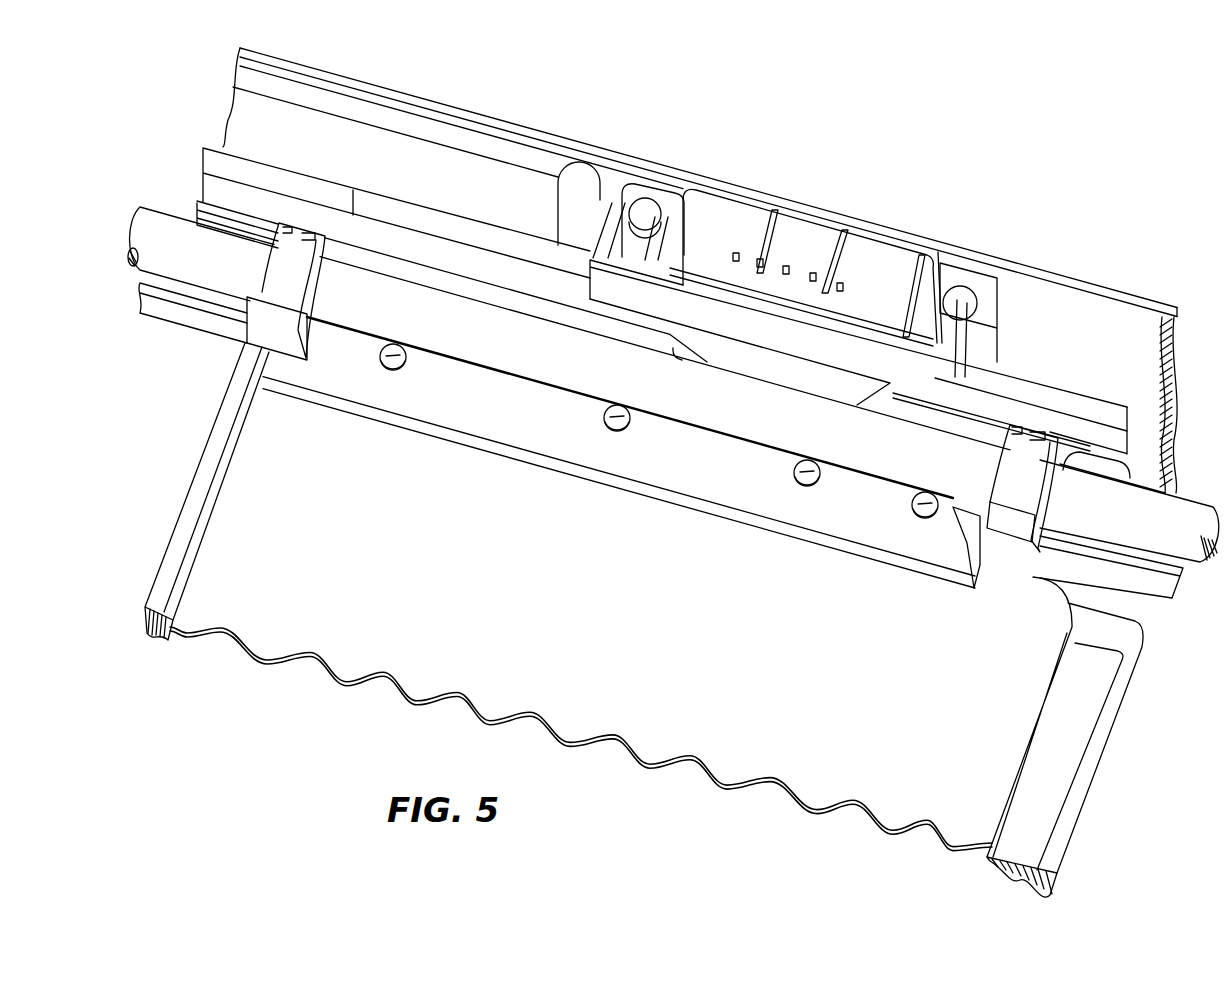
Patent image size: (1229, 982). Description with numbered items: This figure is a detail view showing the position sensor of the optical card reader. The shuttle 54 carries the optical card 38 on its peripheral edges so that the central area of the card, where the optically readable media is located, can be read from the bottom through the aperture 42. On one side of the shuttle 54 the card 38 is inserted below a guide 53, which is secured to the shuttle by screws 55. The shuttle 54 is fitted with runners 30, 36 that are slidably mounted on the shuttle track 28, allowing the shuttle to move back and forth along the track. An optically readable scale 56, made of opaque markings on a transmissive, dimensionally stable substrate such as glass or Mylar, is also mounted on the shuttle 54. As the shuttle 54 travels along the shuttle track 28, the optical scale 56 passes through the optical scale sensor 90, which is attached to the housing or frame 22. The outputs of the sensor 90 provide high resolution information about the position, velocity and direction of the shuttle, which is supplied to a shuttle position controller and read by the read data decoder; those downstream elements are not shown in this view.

The housing 22 is at (1010, 263).
The shuttle track 28 is at (513, 328).
The runner 30 is at (279, 255).
The runner 36 is at (1017, 463).
The card 38 is at (691, 712).
The aperture 42 is at (435, 485).
The guide 53 is at (681, 475).
The shuttle 54 is at (1067, 753).
The screws 55 is at (393, 360).
The optically readable scale 56 is at (1100, 407).
The optical scale sensor 90 is at (730, 207).